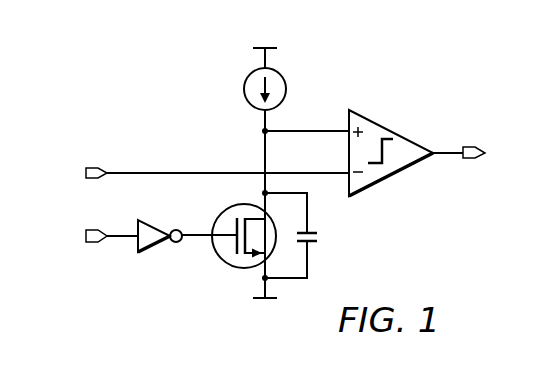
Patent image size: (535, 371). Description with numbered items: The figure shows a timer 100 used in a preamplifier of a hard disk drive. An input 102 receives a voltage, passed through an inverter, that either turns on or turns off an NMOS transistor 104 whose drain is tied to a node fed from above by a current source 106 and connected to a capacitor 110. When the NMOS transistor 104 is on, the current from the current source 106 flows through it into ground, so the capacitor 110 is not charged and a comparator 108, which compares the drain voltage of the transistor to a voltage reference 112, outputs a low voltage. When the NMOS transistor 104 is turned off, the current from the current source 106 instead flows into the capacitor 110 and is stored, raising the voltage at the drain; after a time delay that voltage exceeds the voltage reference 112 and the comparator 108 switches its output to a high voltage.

The timer 100 is at (355, 58).
The input 102 is at (93, 243).
The NMOS transistor 104 is at (227, 262).
The current source 106 is at (245, 88).
The comparator 108 is at (387, 127).
The capacitor 110 is at (320, 238).
The voltage reference 112 is at (90, 167).